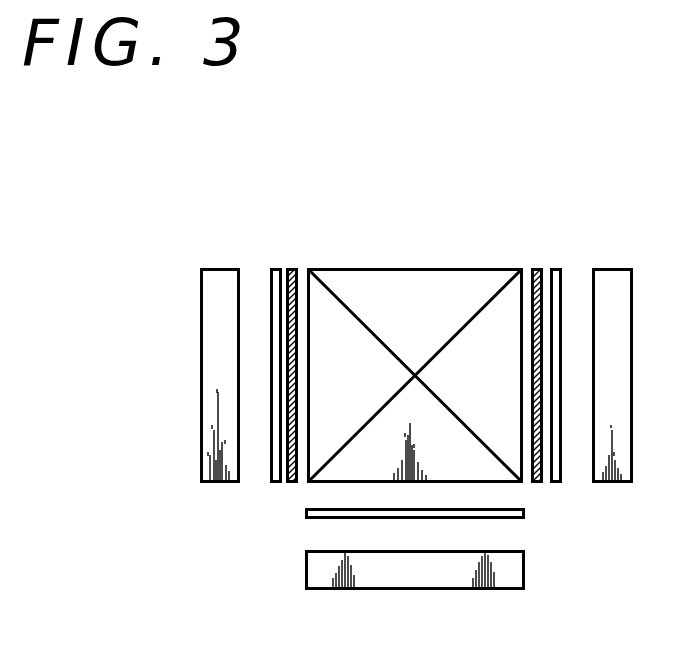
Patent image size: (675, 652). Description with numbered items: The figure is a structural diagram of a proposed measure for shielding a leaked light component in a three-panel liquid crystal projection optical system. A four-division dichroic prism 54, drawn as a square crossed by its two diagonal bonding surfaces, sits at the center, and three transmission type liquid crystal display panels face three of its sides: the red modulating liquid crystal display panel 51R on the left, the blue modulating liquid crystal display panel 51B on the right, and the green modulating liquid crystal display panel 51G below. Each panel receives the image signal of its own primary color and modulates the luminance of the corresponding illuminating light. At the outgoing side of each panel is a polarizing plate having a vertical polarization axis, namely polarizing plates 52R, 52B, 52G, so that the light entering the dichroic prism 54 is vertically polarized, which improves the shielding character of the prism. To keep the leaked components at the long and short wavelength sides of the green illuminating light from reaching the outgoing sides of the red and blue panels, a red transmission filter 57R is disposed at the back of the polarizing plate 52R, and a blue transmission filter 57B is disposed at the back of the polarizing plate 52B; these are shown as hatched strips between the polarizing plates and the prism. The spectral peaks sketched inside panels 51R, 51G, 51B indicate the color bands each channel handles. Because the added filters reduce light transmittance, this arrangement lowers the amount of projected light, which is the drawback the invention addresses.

The red modulating transmission type liquid crystal display panel 51R is at (210, 484).
The green modulating liquid crystal display panel 51G is at (482, 592).
The blue modulating liquid crystal display panel 51B is at (610, 484).
The polarizing plate 52R is at (275, 267).
The polarizing plate 52G is at (525, 513).
The polarizing plate 52B is at (555, 267).
The red transmission filter 57R is at (292, 267).
The blue transmission filter 57B is at (537, 267).
The four-division dichroic prism 54 is at (418, 283).